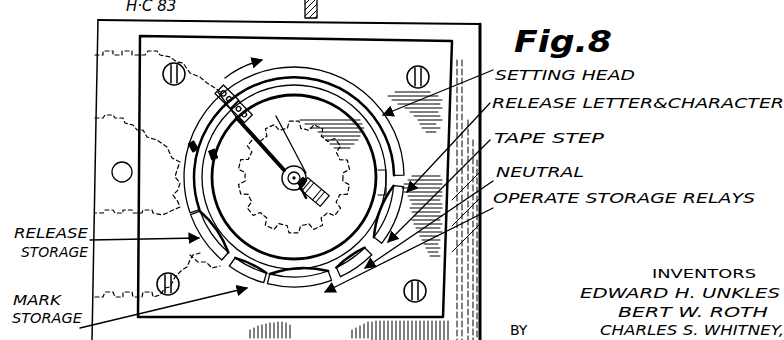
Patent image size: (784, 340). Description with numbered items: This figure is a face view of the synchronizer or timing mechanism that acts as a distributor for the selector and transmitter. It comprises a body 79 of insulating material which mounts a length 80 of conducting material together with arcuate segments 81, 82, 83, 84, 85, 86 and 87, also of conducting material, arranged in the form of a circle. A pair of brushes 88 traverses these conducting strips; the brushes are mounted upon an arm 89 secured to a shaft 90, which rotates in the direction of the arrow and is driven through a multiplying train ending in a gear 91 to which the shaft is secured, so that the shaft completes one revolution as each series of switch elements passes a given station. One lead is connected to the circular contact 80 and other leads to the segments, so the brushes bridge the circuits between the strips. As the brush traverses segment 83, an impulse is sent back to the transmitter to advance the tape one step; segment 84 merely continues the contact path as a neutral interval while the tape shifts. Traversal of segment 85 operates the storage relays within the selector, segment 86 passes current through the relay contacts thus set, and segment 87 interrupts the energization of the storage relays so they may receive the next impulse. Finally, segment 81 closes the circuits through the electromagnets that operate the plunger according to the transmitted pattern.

The body 79 is at (412, 50).
The length of conducting material 80 is at (323, 100).
The arcuate segment 81 is at (313, 66).
The arcuate segment 82 is at (398, 203).
The arcuate segment 83 is at (380, 262).
The arcuate segment 84 is at (357, 258).
The arcuate segment 85 is at (277, 284).
The arcuate segment 86 is at (243, 276).
The arcuate segment 87 is at (200, 240).
The brushes 88 is at (217, 132).
The arm 89 is at (246, 127).
The shaft 90 is at (306, 180).
The gear 91 is at (294, 188).